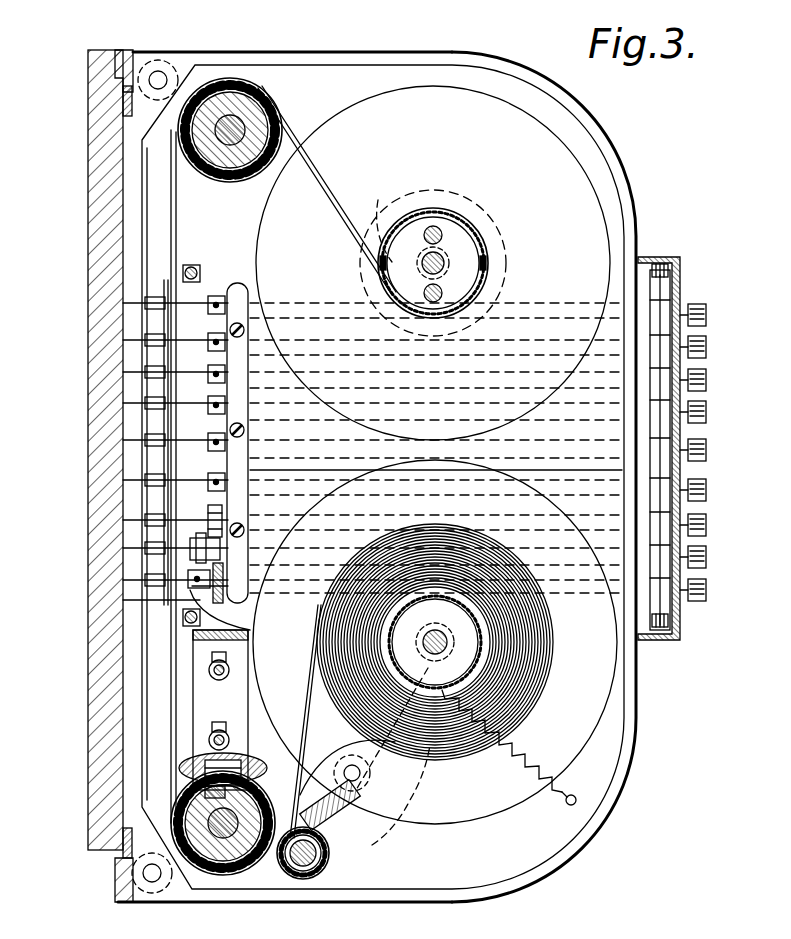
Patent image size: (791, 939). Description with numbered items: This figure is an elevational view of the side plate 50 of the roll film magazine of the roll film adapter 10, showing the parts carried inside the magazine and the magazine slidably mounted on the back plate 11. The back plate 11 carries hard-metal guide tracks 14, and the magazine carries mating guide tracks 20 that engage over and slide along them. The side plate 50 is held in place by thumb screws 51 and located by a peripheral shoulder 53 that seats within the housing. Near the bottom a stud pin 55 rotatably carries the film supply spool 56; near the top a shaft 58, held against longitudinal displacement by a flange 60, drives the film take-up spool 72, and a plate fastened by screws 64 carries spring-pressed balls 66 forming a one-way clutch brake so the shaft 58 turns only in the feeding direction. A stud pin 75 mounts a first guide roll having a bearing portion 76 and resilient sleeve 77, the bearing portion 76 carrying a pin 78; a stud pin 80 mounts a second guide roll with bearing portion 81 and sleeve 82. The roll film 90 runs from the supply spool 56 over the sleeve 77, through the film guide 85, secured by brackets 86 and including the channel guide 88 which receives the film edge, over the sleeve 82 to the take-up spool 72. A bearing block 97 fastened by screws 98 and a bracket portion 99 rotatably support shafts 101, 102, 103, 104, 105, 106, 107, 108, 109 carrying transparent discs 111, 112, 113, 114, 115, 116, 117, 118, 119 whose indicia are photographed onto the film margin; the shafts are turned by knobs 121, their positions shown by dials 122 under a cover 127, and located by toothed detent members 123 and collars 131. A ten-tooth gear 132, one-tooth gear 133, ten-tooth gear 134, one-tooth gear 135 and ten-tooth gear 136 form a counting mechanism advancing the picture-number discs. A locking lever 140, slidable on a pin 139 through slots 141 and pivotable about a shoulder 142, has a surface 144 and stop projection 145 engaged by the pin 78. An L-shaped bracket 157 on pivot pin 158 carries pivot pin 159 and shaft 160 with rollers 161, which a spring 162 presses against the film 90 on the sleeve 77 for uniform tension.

The roll film adapter 10 is at (620, 150).
The back plate 11 is at (100, 172).
The guide tracks 14 is at (125, 106).
The guide tracks 20 is at (124, 50).
The side plate 50 is at (607, 750).
The thumb screws 51 is at (158, 72).
The shoulder 53 is at (440, 52).
The stud pin 55 is at (452, 642).
The film supply spool 56 is at (600, 691).
The shaft 58 is at (452, 250).
The flange 60 is at (505, 270).
The screws 64 is at (470, 213).
The ball 66 is at (405, 165).
The film take-up spool 72 is at (580, 200).
The stud pin 75 is at (180, 770).
The bearing portion 76 is at (200, 822).
The resilient sleeve 77 is at (258, 868).
The pin 78 is at (270, 806).
The stud pin 80 is at (270, 100).
The bearing portion 81 is at (220, 155).
The resilient sleeve portion 82 is at (243, 168).
The film guide 85 is at (178, 623).
The brackets 86 is at (193, 268).
The channel guide 88 is at (178, 418).
The roll film 90 is at (322, 172).
The bearing block 97 is at (248, 503).
The screws 98 is at (246, 431).
The bracket portion 99 is at (590, 468).
The shaft 101 is at (572, 595).
The shaft 102 is at (570, 550).
The shaft 103 is at (582, 515).
The shaft 104 is at (566, 480).
The shaft 105 is at (540, 440).
The shaft 106 is at (565, 404).
The shaft 107 is at (540, 372).
The shaft 108 is at (540, 340).
The shaft 109 is at (542, 303).
The transparent disc 111 is at (160, 590).
The transparent disc 112 is at (150, 553).
The transparent disc 113 is at (150, 518).
The transparent disc 114 is at (150, 484).
The transparent disc 115 is at (150, 444).
The transparent disc 116 is at (150, 406).
The transparent disc 117 is at (150, 370).
The transparent disc 118 is at (150, 343).
The transparent disc 119 is at (150, 310).
The knobs 121 is at (708, 318).
The dial 122 is at (680, 280).
The detent member 123 is at (666, 257).
The cover 127 is at (680, 632).
The collars 131 is at (212, 296).
The ten-tooth gear 132 is at (208, 515).
The one-tooth gear 133 is at (222, 545).
The ten-tooth gear 134 is at (245, 600).
The one-tooth gear 135 is at (232, 623).
The ten-tooth gear 136 is at (250, 572).
The pin 139 is at (229, 672).
The locking lever 140 is at (248, 695).
The slots 141 is at (224, 655).
The shoulder 142 is at (365, 738).
The surface 144 is at (223, 769).
The stop projection 145 is at (372, 760).
The L-shaped bracket 157 is at (352, 822).
The pivot pin 158 is at (372, 780).
The pivot pin 159 is at (330, 855).
The shaft 160 is at (328, 866).
The rollers 161 is at (308, 867).
The spring 162 is at (502, 752).